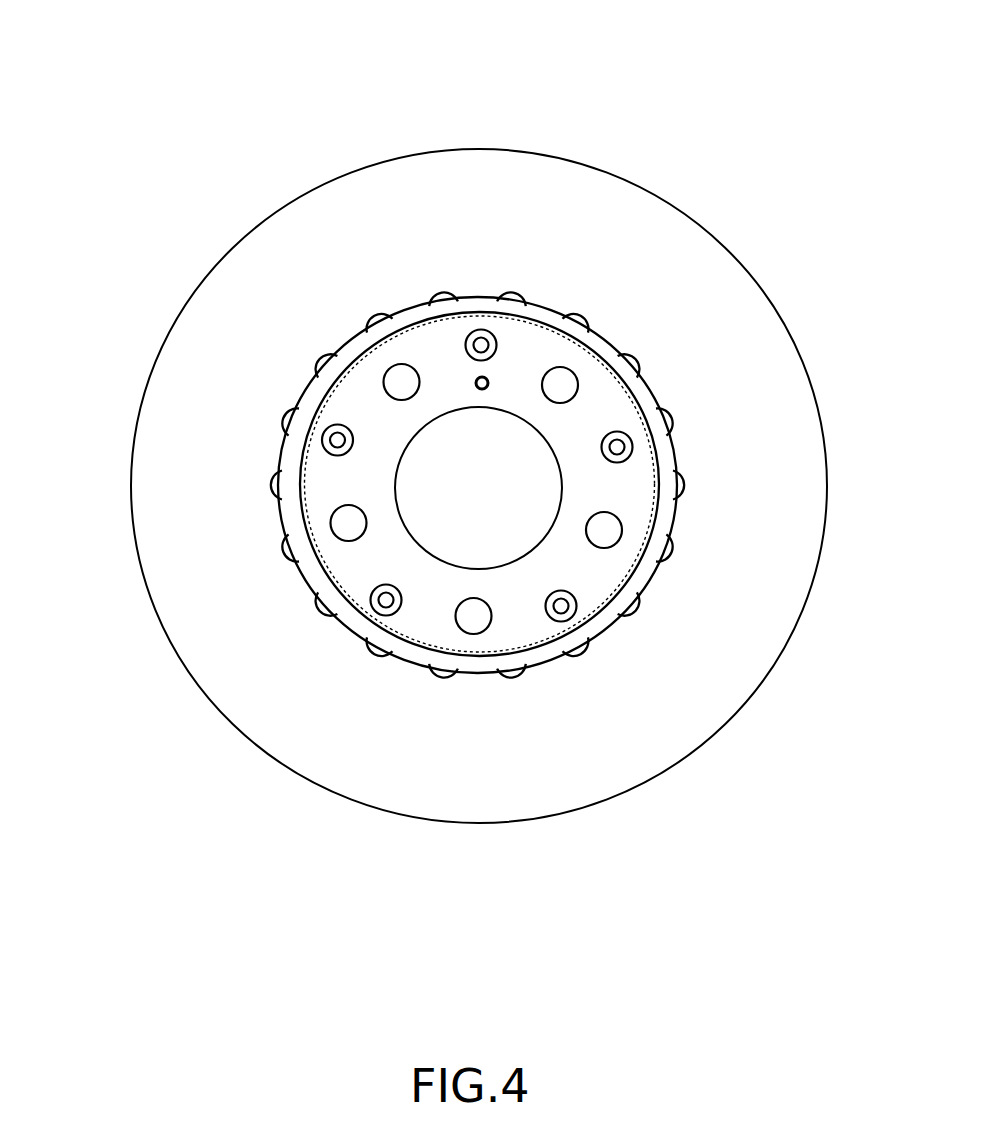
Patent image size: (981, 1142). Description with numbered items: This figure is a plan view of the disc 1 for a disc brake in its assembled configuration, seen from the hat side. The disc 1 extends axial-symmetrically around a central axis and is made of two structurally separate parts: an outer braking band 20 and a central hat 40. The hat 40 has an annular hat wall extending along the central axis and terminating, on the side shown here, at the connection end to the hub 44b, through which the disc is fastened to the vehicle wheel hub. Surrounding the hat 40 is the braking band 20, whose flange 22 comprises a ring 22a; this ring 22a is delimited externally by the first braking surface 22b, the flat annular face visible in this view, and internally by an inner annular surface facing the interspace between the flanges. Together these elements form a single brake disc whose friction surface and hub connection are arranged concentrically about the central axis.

The disc 1 is at (465, 486).
The braking band 20 is at (465, 486).
The flange 22 is at (482, 448).
The ring 22a is at (713, 328).
The first braking surface 22b is at (300, 702).
The hat 40 is at (564, 627).
The connection end to the hub 44b is at (426, 608).